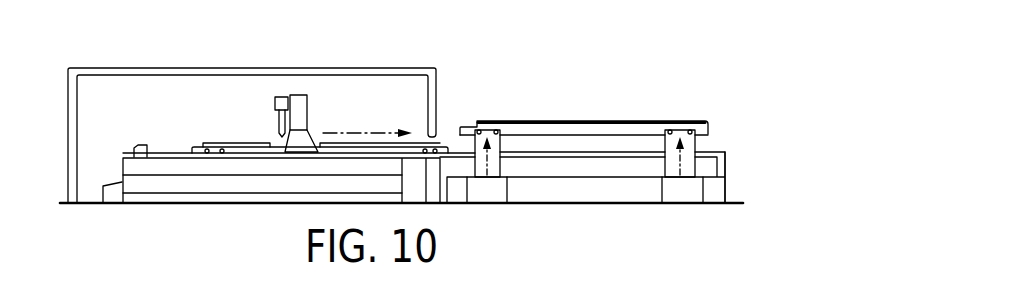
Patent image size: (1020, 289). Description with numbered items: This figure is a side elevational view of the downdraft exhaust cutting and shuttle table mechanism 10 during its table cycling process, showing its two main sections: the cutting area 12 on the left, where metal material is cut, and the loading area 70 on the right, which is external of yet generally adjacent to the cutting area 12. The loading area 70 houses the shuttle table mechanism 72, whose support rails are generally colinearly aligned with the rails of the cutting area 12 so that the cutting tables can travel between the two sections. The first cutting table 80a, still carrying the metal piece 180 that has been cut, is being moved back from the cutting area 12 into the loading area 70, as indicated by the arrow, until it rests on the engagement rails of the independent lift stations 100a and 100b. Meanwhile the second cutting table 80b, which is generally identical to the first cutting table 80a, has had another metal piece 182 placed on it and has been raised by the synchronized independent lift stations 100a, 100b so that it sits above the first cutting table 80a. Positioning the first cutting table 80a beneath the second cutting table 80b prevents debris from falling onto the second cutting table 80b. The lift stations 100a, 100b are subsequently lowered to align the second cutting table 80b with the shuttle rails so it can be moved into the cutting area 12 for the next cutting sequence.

The downdraft exhaust cutting and shuttle table mechanism 10 is at (597, 144).
The cutting area 12 is at (175, 187).
The loading area 70 is at (738, 175).
The shuttle table mechanism 72 is at (601, 186).
The first cutting table 80a is at (360, 148).
The second cutting table 80b is at (620, 127).
The independent lift station 100a is at (483, 168).
The independent lift station 100b is at (688, 165).
The metal piece 180 is at (371, 150).
The metal piece 182 is at (559, 121).